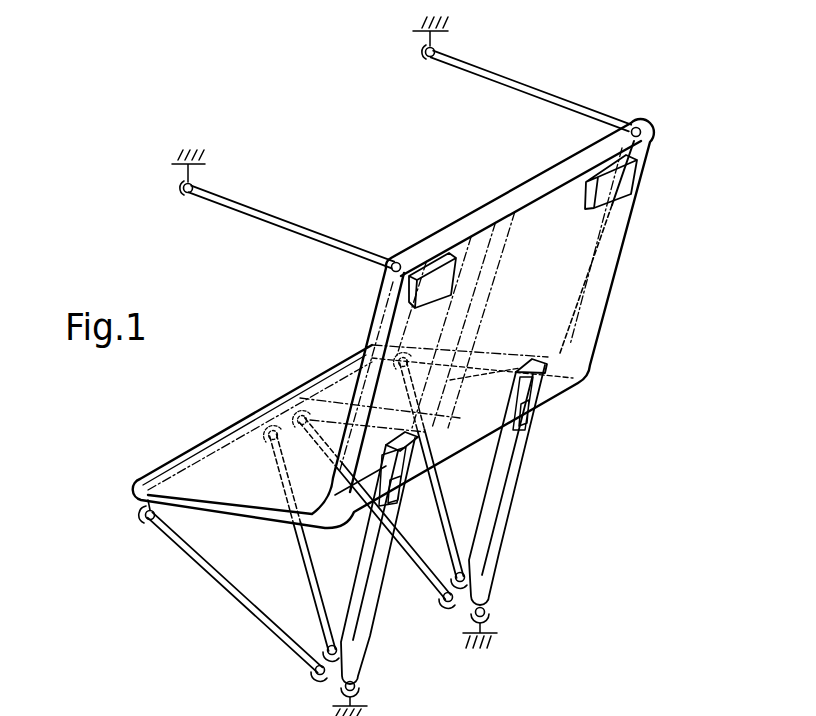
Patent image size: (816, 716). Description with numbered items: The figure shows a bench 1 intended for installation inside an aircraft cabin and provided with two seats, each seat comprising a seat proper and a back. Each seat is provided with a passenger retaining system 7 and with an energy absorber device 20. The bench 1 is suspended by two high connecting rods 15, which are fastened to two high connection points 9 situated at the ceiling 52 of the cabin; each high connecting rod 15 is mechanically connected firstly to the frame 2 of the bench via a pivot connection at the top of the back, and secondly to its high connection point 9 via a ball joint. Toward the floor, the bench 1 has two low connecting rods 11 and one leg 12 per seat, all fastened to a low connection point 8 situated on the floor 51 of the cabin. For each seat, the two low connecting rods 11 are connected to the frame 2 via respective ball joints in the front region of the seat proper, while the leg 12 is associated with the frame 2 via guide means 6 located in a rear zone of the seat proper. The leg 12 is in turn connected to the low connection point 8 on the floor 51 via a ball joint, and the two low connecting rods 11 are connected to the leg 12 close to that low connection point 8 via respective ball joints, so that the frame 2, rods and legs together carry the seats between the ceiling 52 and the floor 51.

The bench 1 is at (668, 325).
The frame 2 is at (622, 252).
The guide means 6 is at (536, 418).
The passenger retaining system 7 is at (435, 278).
The low connection point 8 is at (345, 690).
The high connection point 9 is at (422, 53).
The low connecting rod 11 is at (452, 518).
The leg 12 is at (526, 474).
The high connecting rod 15 is at (541, 93).
The energy absorber device 20 is at (536, 383).
The floor 51 is at (368, 712).
The ceiling 52 is at (418, 30).